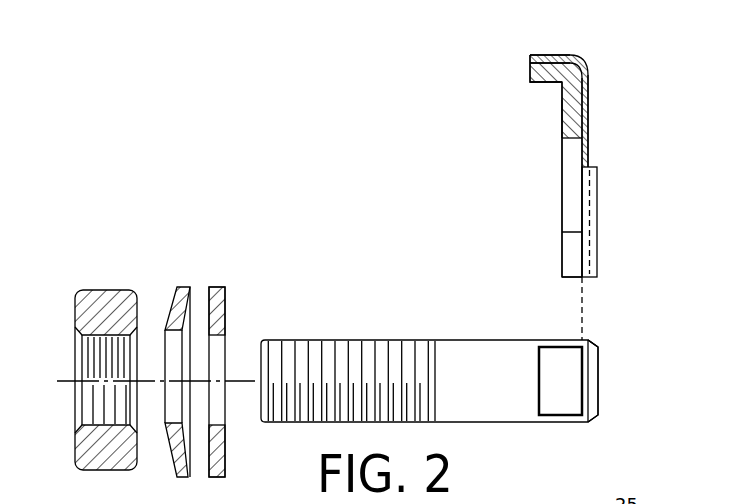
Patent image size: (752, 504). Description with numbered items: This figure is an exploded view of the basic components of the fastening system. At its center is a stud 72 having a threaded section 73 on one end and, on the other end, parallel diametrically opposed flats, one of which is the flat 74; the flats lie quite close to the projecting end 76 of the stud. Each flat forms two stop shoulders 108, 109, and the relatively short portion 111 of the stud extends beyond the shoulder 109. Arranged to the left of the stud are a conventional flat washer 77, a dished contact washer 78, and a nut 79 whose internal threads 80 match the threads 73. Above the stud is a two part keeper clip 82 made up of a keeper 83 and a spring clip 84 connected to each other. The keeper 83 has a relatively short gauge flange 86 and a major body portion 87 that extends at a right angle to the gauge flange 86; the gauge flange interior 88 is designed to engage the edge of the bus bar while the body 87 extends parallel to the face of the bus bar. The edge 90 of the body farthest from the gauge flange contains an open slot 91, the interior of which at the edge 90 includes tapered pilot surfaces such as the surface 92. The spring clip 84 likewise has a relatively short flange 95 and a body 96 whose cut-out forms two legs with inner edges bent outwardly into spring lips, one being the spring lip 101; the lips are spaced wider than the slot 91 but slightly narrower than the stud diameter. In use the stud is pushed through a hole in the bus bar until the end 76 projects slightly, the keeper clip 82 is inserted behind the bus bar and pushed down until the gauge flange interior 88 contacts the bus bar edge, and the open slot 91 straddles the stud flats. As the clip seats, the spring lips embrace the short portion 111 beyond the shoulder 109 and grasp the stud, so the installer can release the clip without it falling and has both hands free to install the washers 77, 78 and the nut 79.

The stud 72 is at (480, 332).
The threaded section 73 is at (330, 340).
The flat 74 is at (555, 403).
The projecting end 76 is at (598, 375).
The flat washer 77 is at (225, 292).
The dished contact washer 78 is at (187, 290).
The nut 79 is at (105, 290).
The internal threads 80 is at (102, 422).
The keeper clip 82 is at (607, 127).
The keeper 83 is at (560, 115).
The spring clip 84 is at (597, 88).
The gauge flange 86 is at (528, 73).
The major body portion 87 is at (560, 128).
The gauge flange interior 88 is at (543, 83).
The edge of the body 90 is at (572, 277).
The open slot 91 is at (568, 195).
The tapered pilot surface 92 is at (566, 257).
The flange 95 is at (550, 53).
The body 96 is at (588, 135).
The spring lip 101 is at (598, 235).
The stop shoulder 108 is at (540, 380).
The stop shoulder 109 is at (580, 388).
The short portion of the stud 111 is at (588, 362).